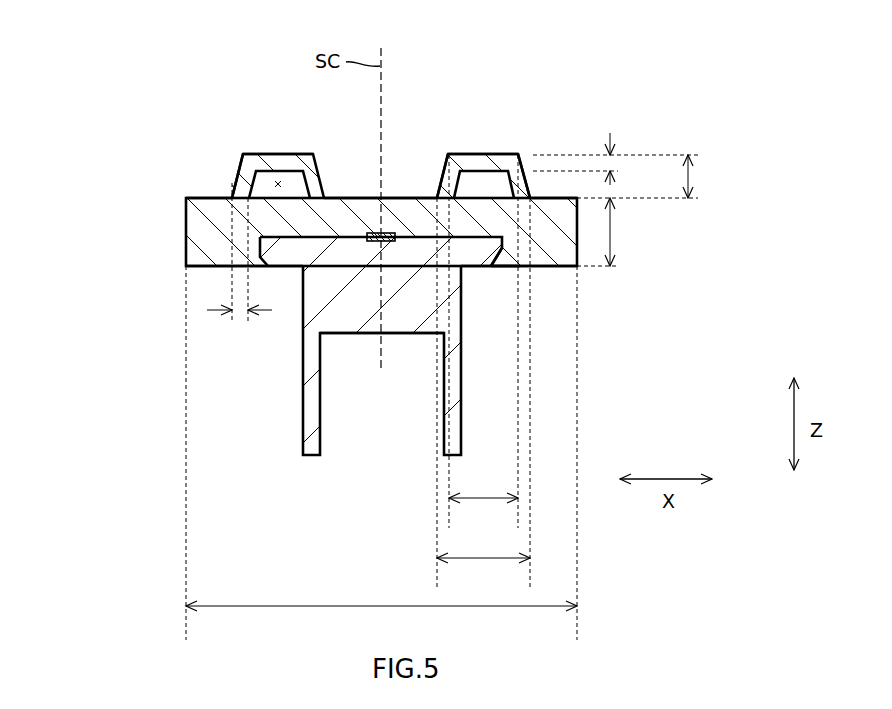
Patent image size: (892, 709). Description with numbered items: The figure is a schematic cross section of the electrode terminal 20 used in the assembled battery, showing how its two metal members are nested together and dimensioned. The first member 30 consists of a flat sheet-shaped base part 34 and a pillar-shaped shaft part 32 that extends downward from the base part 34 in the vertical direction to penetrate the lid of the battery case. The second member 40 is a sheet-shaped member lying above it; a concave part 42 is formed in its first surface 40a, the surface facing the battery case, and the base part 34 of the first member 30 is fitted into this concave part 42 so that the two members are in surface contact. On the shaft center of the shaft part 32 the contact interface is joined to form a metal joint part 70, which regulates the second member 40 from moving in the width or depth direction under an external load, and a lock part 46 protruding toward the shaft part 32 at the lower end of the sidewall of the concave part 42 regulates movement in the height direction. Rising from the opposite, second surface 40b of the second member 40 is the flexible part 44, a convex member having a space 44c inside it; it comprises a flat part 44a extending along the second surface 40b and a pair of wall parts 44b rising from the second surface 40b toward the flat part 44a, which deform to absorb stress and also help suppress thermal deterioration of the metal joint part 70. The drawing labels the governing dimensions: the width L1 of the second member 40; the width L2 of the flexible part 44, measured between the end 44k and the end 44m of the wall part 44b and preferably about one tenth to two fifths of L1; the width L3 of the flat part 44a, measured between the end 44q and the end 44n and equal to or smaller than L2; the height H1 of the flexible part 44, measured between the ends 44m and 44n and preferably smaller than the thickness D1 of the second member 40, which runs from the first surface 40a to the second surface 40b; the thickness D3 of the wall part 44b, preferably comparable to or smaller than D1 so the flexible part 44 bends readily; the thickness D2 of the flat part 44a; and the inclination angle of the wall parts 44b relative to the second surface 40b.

The electrode terminal 20 is at (73, 78).
The second member 40 is at (183, 222).
The first surface 40a is at (198, 268).
The second surface 40b is at (186, 197).
The base part 34 is at (300, 252).
The first member 30 is at (300, 346).
The shaft part 32 is at (412, 317).
The concave part 42 is at (490, 247).
The lock part 46 is at (500, 258).
The metal joint part 70 is at (372, 243).
The flexible part 44 is at (304, 153).
The flat part 44a is at (292, 155).
The wall part 44b is at (242, 162).
The space 44c is at (276, 181).
The end of wall part 44k is at (435, 197).
The end of flat part 44q is at (447, 155).
The end of flat part 44n is at (520, 155).
The end of wall part 44m is at (533, 197).
The thickness of second member D1 is at (628, 232).
The thickness of flat part D2 is at (613, 162).
The thickness of wall part D3 is at (239, 329).
The height of flexible part H1 is at (707, 176).
The width of second member L1 is at (381, 621).
The width of flexible part L2 is at (483, 573).
The width of flat part L3 is at (483, 513).